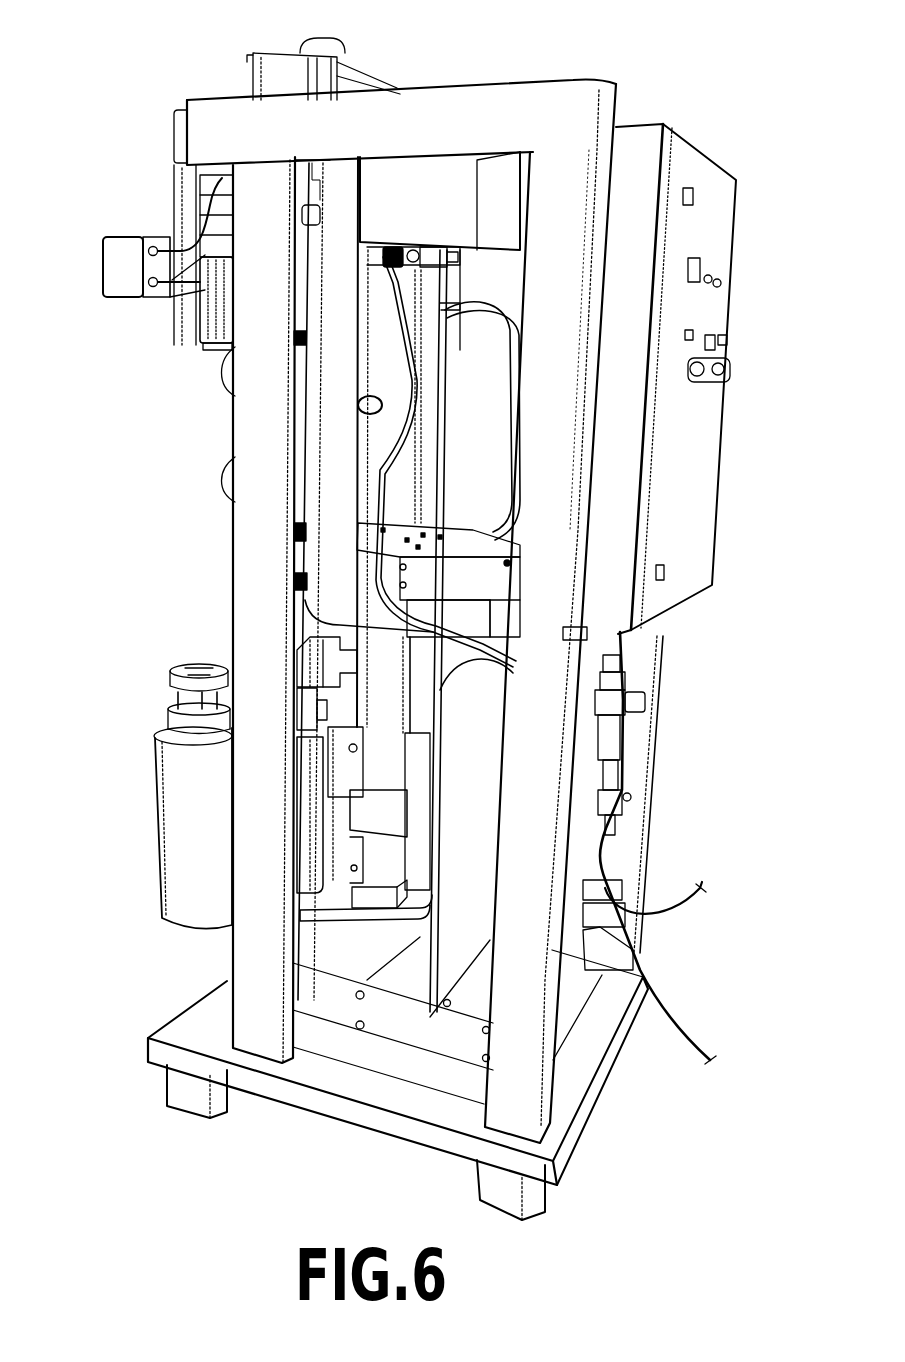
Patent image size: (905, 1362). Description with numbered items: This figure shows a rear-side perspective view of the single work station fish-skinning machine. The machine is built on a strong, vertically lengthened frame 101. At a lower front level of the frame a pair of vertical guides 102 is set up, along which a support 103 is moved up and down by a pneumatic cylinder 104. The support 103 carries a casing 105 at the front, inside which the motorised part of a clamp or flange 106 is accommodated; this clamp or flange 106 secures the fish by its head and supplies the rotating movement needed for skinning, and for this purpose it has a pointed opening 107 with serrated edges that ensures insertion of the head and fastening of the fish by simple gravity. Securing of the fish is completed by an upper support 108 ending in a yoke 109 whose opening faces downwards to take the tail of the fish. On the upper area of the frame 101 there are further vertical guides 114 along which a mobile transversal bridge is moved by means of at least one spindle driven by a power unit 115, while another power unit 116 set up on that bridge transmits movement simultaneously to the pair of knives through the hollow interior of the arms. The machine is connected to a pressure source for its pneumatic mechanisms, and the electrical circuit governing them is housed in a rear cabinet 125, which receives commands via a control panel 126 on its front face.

The frame 101 is at (250, 512).
The vertical guides 102 is at (310, 710).
The support 103 is at (307, 788).
The pneumatic cylinder 104 is at (383, 857).
The casing 105 is at (180, 780).
The clamp or flange 106 is at (173, 727).
The pointed opening 107 is at (188, 665).
The upper support 108 is at (170, 295).
The yoke 109 is at (200, 325).
The vertical guides 114 is at (335, 400).
The power unit 115 is at (443, 650).
The power unit 116 is at (443, 195).
The rear cabinet 125 is at (699, 462).
The control panel 126 is at (120, 240).